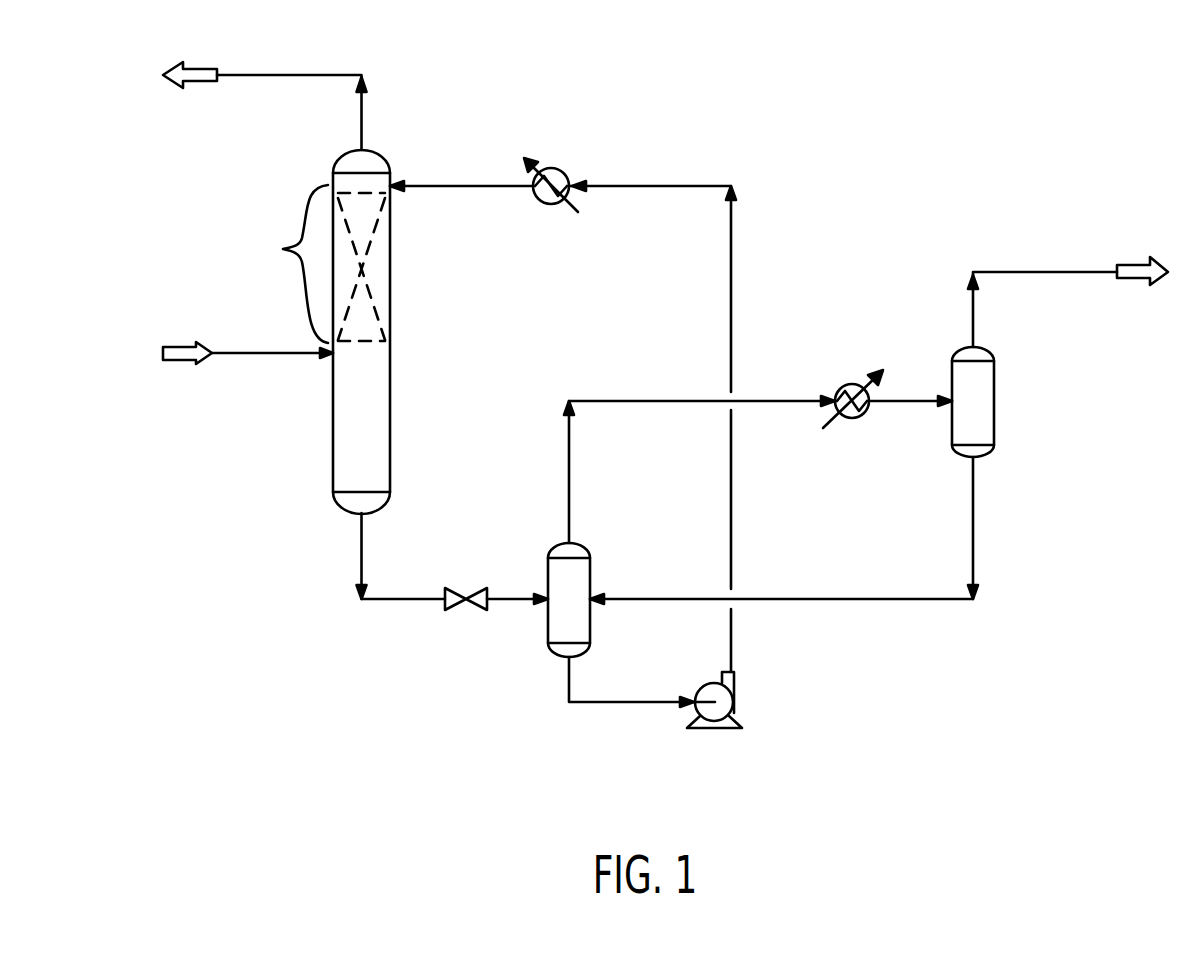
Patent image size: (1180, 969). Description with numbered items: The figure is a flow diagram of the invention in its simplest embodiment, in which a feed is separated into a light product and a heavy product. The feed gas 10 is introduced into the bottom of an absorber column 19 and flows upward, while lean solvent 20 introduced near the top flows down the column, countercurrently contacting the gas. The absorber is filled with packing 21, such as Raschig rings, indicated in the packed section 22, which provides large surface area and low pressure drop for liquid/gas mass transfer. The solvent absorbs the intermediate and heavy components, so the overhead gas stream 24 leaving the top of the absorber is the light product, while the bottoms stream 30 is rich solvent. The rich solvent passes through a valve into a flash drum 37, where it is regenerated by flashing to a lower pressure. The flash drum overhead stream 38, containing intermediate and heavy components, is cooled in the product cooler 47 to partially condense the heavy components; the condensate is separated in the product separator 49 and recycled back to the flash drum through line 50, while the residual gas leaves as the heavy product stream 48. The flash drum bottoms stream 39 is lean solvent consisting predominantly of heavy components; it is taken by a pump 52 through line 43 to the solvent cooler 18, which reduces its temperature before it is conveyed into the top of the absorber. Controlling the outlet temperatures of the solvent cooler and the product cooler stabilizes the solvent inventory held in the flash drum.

The feed gas 10 is at (265, 356).
The solvent cooler 18 is at (567, 172).
The absorber column 19 is at (390, 416).
The solvent going into the absorber 20 is at (464, 184).
The packing 21 is at (375, 280).
The packed rectification section 22 is at (290, 264).
The overhead gas stream 24 is at (303, 73).
The bottoms stream 30 is at (391, 602).
The flash drum 37 is at (553, 552).
The flash drum overhead stream 38 is at (621, 399).
The flash drum bottoms stream 39 is at (631, 700).
The pump discharge line 43 is at (674, 184).
The product cooler 47 is at (838, 388).
The vapor product line 48 is at (1053, 270).
The product separator 49 is at (994, 392).
The line 50 is at (885, 597).
The pump 52 is at (737, 690).